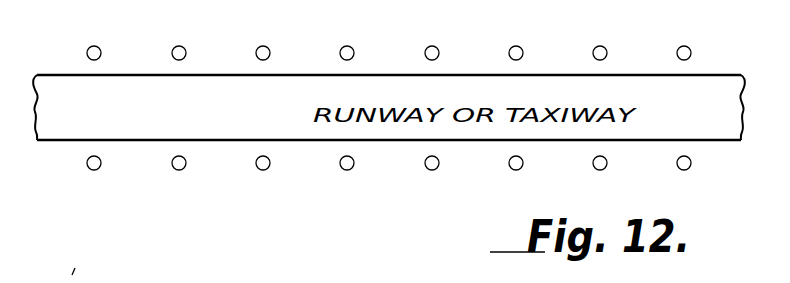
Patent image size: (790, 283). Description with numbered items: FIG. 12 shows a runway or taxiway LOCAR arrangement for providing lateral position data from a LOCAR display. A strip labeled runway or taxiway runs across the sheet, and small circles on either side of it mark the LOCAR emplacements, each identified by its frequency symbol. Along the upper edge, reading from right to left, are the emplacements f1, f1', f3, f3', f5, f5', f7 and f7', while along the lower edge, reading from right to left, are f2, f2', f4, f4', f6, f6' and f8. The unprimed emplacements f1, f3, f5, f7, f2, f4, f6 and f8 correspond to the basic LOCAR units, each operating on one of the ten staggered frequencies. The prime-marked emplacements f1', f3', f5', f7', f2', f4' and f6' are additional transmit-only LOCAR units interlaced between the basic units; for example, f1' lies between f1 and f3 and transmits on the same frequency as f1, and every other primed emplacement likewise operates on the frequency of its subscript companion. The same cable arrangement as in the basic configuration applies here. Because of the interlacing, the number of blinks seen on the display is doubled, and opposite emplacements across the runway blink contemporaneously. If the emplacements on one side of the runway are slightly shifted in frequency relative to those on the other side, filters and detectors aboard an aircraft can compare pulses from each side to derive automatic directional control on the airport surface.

The LOCAR frequency symbol f1 is at (687, 38).
The transmit-only LOCAR emplacement f1' is at (605, 38).
The LOCAR frequency symbol f2 is at (603, 175).
The transmit-only LOCAR emplacement f2' is at (521, 175).
The LOCAR frequency symbol f3 is at (519, 38).
The transmit-only LOCAR emplacement f3' is at (438, 38).
The LOCAR frequency symbol f4 is at (434, 175).
The transmit-only LOCAR emplacement f4' is at (352, 175).
The LOCAR frequency symbol f5 is at (350, 38).
The transmit-only LOCAR emplacement f5' is at (269, 38).
The LOCAR frequency symbol f6 is at (265, 175).
The transmit-only LOCAR emplacement f6' is at (183, 175).
The LOCAR frequency symbol f7 is at (182, 38).
The transmit-only LOCAR emplacement f7' is at (101, 38).
The LOCAR frequency symbol f8 is at (96, 175).